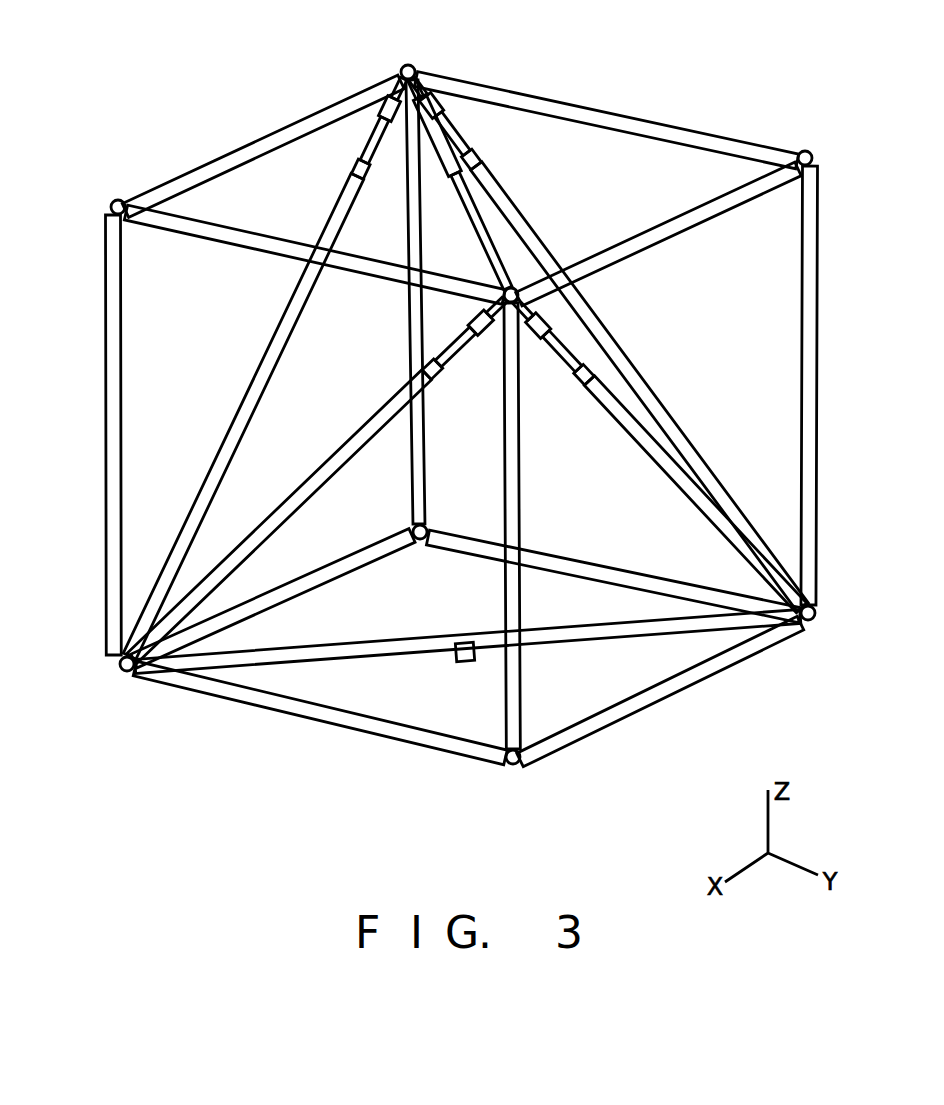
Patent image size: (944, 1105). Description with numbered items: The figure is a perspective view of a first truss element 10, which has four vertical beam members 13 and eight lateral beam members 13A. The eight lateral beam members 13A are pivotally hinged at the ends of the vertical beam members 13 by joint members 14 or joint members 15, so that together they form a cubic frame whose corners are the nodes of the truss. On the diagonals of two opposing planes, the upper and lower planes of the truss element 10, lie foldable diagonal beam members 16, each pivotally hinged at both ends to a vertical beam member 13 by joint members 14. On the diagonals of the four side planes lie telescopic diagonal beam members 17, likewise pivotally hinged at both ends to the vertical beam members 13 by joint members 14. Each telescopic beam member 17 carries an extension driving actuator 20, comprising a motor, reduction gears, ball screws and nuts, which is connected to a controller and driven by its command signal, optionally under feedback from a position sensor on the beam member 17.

The first truss element 10 is at (330, 74).
The vertical beam member 13 is at (405, 328).
The lateral beam member 13A is at (245, 142).
The joint member 14 is at (415, 64).
The joint member 15 is at (815, 166).
The foldable diagonal beam member 16 is at (465, 205).
The telescopic diagonal beam member 17 is at (625, 368).
The extension driving actuator 20 is at (372, 128).